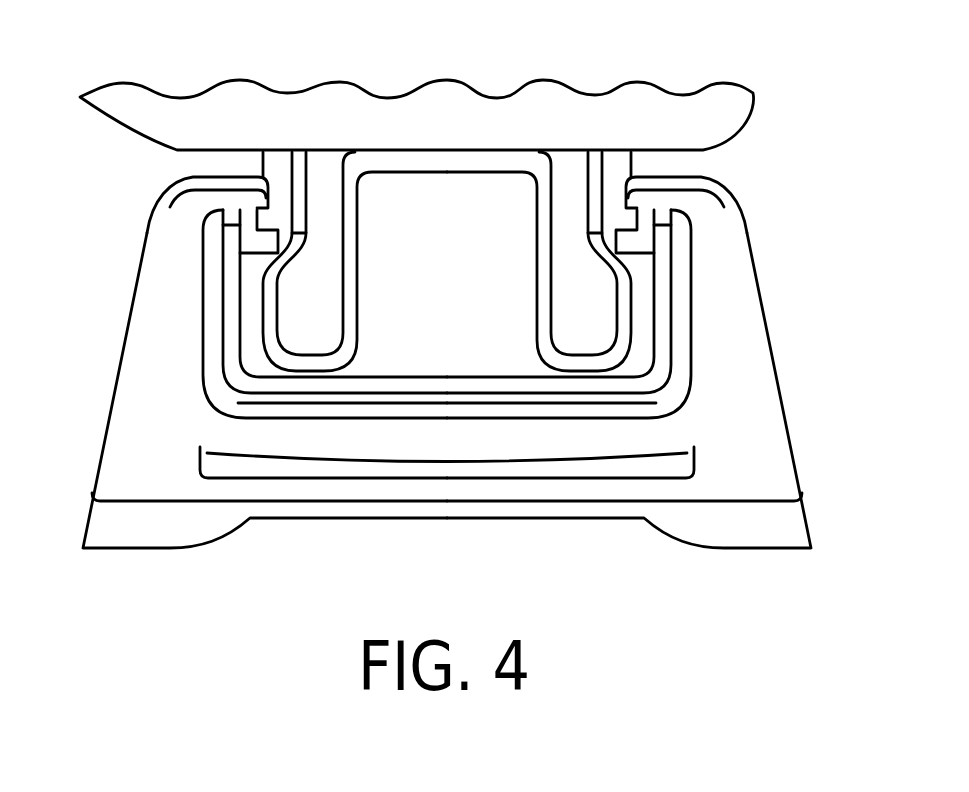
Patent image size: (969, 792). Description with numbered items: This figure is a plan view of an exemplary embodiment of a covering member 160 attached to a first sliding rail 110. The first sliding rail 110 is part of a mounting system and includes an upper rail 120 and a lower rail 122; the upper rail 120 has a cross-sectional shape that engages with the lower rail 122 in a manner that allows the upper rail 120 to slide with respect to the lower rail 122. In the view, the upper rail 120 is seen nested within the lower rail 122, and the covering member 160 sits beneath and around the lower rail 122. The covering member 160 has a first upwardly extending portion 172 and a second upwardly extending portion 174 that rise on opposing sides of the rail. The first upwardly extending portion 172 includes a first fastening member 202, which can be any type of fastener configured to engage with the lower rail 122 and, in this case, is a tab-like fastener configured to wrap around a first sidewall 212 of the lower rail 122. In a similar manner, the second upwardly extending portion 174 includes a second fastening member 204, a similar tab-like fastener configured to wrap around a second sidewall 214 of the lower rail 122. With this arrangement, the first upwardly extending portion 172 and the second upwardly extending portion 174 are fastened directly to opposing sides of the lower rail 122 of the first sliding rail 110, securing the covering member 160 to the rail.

The first sliding rail 110 is at (364, 132).
The upper rail 120 is at (547, 157).
The lower rail 122 is at (520, 383).
The covering member 160 is at (782, 145).
The first upwardly extending portion 172 is at (710, 203).
The second upwardly extending portion 174 is at (180, 212).
The first fastening member 202 is at (647, 237).
The second fastening member 204 is at (250, 243).
The first sidewall 212 is at (667, 348).
The second sidewall 214 is at (230, 352).